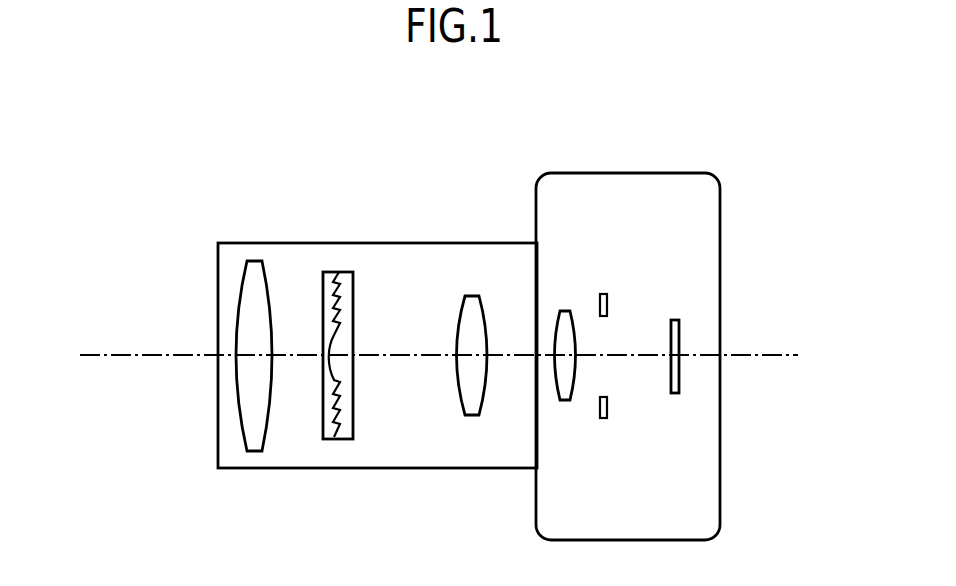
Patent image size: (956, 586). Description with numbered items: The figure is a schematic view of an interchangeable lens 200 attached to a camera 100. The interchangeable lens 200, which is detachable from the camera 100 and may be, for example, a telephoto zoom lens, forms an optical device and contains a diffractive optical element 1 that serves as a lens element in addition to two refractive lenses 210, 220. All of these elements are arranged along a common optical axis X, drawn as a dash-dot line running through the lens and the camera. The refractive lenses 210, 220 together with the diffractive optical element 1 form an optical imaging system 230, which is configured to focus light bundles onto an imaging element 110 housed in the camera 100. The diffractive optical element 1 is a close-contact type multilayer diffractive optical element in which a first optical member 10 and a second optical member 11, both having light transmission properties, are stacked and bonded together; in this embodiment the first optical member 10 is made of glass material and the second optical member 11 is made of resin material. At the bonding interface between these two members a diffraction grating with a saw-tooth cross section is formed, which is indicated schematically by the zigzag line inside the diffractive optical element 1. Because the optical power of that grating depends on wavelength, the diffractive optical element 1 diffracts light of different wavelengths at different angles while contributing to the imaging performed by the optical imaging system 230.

The diffractive optical element 1 is at (340, 348).
The first optical member 10 is at (323, 418).
The second optical member 11 is at (353, 418).
The camera 100 is at (628, 173).
The imaging element 110 is at (679, 340).
The interchangeable lens 200 is at (404, 243).
The refractive lens 210 is at (252, 451).
The refractive lens 220 is at (470, 415).
The optical imaging system 230 is at (428, 291).
The optical axis X is at (117, 354).